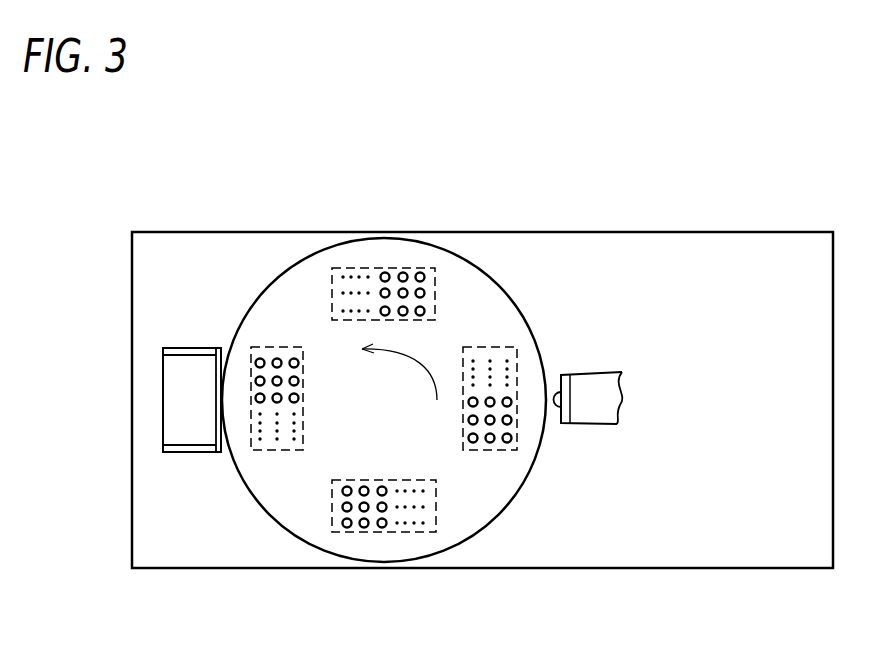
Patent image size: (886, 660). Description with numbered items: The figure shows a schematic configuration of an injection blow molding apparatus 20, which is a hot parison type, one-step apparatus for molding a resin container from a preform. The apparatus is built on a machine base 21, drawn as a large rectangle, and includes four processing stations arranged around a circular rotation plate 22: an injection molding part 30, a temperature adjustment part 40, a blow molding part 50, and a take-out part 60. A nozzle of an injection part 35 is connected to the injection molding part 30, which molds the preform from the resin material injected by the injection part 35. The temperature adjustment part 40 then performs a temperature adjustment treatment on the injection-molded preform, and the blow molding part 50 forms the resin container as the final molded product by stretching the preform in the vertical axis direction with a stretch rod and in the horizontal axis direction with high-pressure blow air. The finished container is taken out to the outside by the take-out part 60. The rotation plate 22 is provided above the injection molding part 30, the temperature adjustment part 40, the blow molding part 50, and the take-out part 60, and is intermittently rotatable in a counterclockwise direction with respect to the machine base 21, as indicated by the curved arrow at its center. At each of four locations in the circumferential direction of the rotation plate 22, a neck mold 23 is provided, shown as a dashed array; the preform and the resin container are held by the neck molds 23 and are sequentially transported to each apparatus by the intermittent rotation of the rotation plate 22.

The injection blow molding apparatus 20 is at (647, 205).
The machine base 21 is at (562, 538).
The rotation plate 22 is at (478, 268).
The neck mold 23 is at (381, 272).
The injection molding part 30 is at (603, 407).
The injection part 35 is at (587, 424).
The temperature adjustment part 40 is at (405, 248).
The blow molding part 50 is at (226, 347).
The take-out part 60 is at (381, 541).